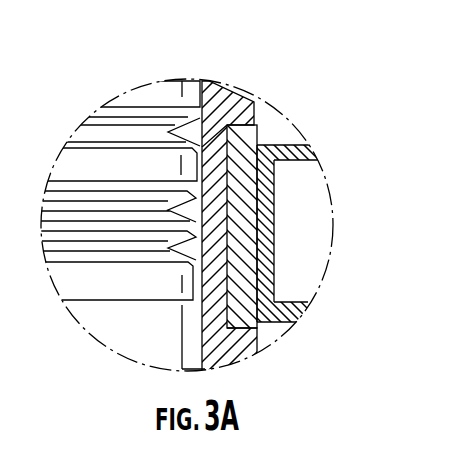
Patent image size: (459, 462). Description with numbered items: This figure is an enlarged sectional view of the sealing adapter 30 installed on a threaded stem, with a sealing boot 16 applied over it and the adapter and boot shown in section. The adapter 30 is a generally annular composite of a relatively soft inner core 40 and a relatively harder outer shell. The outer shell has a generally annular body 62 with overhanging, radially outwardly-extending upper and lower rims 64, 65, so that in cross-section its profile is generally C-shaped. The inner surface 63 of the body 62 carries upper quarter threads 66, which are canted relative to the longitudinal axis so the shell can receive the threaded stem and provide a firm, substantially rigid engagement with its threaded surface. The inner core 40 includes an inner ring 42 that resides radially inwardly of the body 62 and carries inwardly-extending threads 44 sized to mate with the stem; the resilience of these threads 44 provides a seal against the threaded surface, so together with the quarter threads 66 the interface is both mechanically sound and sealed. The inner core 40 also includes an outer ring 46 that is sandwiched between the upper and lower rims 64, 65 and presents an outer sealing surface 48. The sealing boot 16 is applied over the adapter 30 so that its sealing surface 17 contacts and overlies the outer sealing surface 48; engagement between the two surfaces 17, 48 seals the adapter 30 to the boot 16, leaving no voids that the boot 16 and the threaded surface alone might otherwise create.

The sealing boot 16 is at (290, 150).
The sealing surface 17 is at (260, 212).
The sealing adapter 30 is at (329, 141).
The inner core 40 is at (268, 335).
The inner ring 42 is at (182, 286).
The threads 44 is at (180, 245).
The outer ring 46 is at (243, 287).
The outer sealing surface 48 is at (259, 126).
The annular body 62 is at (245, 200).
The inner surface 63 is at (201, 97).
The upper rim 64 is at (222, 95).
The lower rim 65 is at (238, 353).
The upper quarter threads 66 is at (198, 141).